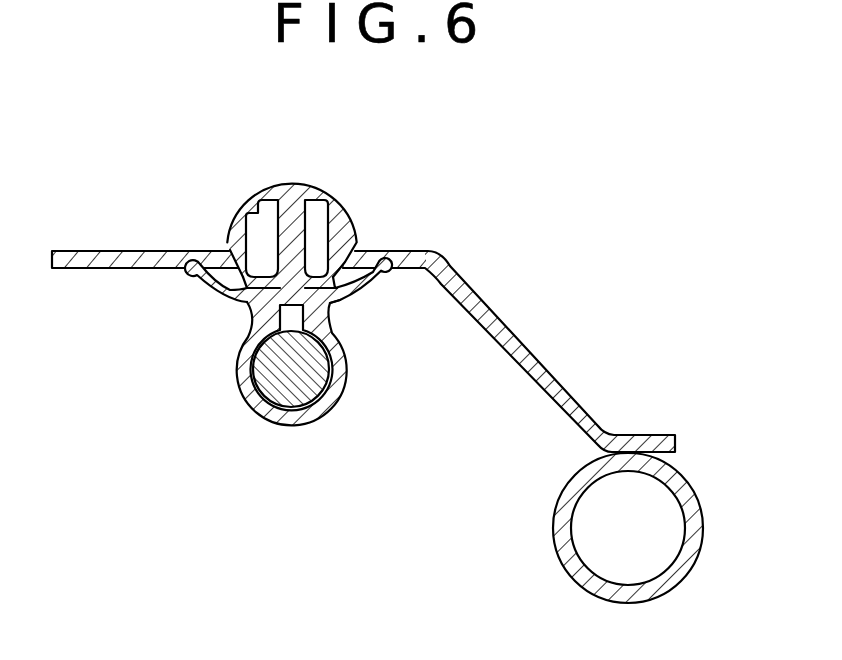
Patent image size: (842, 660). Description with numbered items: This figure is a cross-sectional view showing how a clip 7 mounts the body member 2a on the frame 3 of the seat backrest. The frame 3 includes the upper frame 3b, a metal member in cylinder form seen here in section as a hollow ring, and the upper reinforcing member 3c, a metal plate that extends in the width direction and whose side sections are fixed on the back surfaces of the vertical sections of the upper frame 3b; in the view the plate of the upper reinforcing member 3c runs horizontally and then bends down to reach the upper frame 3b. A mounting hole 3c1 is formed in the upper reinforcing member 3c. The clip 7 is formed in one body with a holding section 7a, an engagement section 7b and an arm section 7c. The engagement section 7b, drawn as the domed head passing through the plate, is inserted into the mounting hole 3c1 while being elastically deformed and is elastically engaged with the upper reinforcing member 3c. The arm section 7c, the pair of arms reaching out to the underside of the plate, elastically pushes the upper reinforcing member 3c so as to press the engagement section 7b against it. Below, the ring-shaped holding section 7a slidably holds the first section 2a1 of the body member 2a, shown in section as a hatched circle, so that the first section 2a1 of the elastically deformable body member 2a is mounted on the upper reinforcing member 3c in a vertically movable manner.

The frame 3 is at (377, 367).
The upper frame 3b is at (562, 525).
The upper reinforcing member 3c is at (473, 274).
The mounting hole 3c1 is at (332, 247).
The clip 7 is at (288, 299).
The holding section 7a is at (276, 394).
The engagement section 7b is at (257, 197).
The arm section 7c is at (372, 296).
The first section 2a1 is at (233, 410).
The body member 2a is at (253, 400).